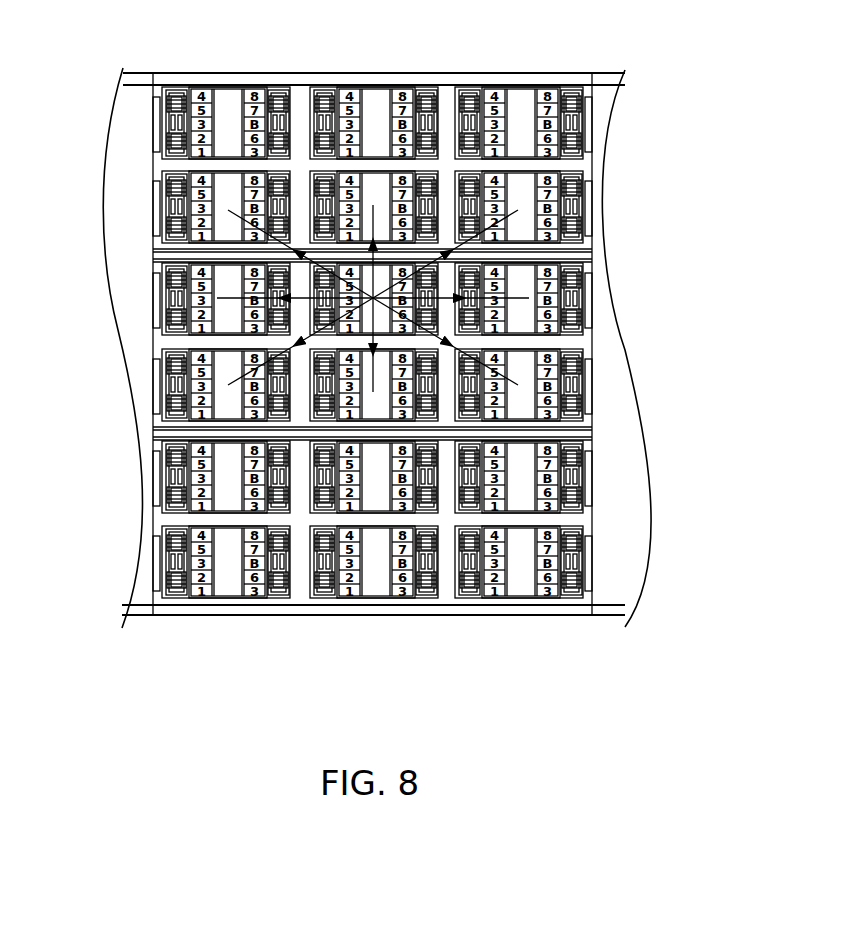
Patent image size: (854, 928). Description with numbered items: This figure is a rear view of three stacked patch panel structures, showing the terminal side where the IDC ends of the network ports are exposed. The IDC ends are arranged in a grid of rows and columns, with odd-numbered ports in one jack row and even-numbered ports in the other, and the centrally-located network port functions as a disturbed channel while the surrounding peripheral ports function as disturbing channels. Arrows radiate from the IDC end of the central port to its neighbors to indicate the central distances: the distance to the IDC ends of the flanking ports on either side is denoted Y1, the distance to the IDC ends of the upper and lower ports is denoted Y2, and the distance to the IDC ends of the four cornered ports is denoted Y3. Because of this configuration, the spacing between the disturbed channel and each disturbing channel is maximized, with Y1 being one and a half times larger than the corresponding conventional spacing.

The central distance to flanking IDC ends Y1 is at (373, 290).
The central distance to upper and lower IDC ends Y2 is at (385, 298).
The central distance to cornered IDC ends Y3 is at (373, 297).